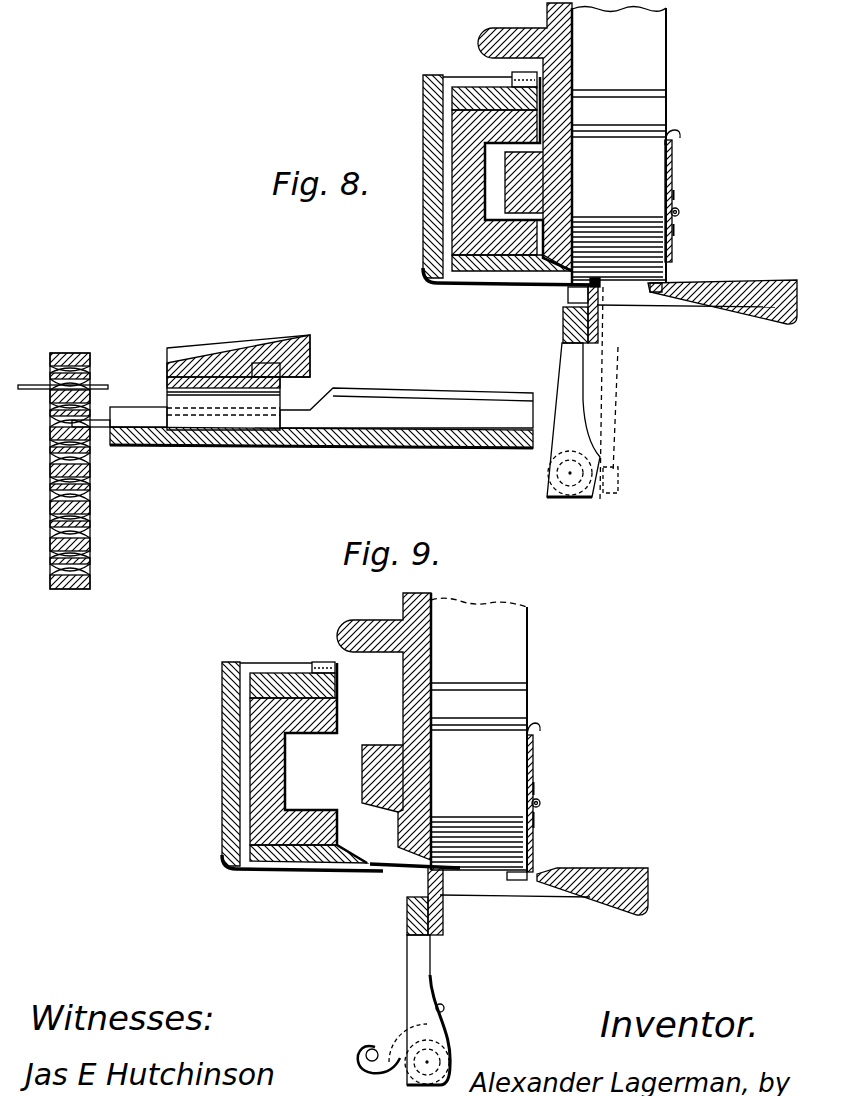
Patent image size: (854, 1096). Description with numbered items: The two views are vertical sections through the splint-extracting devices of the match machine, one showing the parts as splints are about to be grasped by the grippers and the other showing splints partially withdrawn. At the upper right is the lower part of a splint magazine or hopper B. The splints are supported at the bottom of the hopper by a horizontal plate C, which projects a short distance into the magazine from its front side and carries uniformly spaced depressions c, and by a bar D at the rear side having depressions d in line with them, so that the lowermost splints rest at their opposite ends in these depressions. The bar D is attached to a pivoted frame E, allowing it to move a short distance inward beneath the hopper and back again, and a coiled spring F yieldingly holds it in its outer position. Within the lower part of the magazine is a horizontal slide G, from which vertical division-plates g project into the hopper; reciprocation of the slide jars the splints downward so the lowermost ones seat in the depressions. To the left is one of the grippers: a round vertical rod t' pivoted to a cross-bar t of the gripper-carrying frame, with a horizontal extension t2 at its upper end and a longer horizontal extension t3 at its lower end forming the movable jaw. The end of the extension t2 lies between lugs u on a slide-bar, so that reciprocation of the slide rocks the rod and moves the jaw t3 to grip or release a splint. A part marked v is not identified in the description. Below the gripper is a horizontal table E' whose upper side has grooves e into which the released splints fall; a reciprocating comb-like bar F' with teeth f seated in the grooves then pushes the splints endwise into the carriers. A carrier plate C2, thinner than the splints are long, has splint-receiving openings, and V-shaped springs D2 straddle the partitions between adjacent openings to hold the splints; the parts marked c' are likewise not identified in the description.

In FIG. 8, the splint magazine or hopper B is at (579, 143).
In FIG. 9, the splint magazine or hopper B is at (438, 732).
In FIG. 8, the horizontal slide G is at (556, 188).
In FIG. 9, the horizontal slide G is at (416, 780).
In FIG. 8, the vertical division-plates g is at (618, 228).
In FIG. 9, the vertical division-plates g is at (477, 816).
In FIG. 8, the lugs u is at (523, 72).
In FIG. 9, the lugs u is at (323, 667).
In FIG. 8, the upper horizontal extension t2 is at (477, 58).
In FIG. 9, the upper horizontal extension t2 is at (276, 648).
In FIG. 8, the packing strip v is at (458, 98).
In FIG. 9, the packing strip v is at (252, 685).
In FIG. 8, the round vertical rod t' is at (483, 176).
In FIG. 9, the round vertical rod t' is at (278, 764).
In FIG. 8, the cross-bar t is at (479, 190).
In FIG. 9, the cross-bar t is at (308, 780).
In FIG. 8, the lower horizontal extension t3 is at (510, 293).
In FIG. 9, the lower horizontal extension t3 is at (341, 880).
In FIG. 8, the depressions d is at (604, 290).
In FIG. 9, the depressions d is at (428, 879).
In FIG. 8, the depressions c is at (655, 308).
In FIG. 9, the depressions c is at (515, 899).
In FIG. 8, the horizontal plate C is at (723, 283).
In FIG. 9, the horizontal plate C is at (593, 877).
In FIG. 8, the bar D is at (612, 368).
In FIG. 8, the pivoted frame E is at (594, 420).
In FIG. 9, the pivoted frame E is at (426, 1010).
In FIG. 8, the V-shaped spring D2 is at (87, 456).
In FIG. 8, the carrier plate C2 is at (76, 598).
In FIG. 8, the rod c' is at (67, 458).
In FIG. 8, the comb-like bar F' is at (222, 382).
In FIG. 8, the teeth f is at (210, 425).
In FIG. 8, the grooves e is at (292, 422).
In FIG. 8, the horizontal table E' is at (321, 452).
In FIG. 9, the coiled spring F is at (379, 1039).